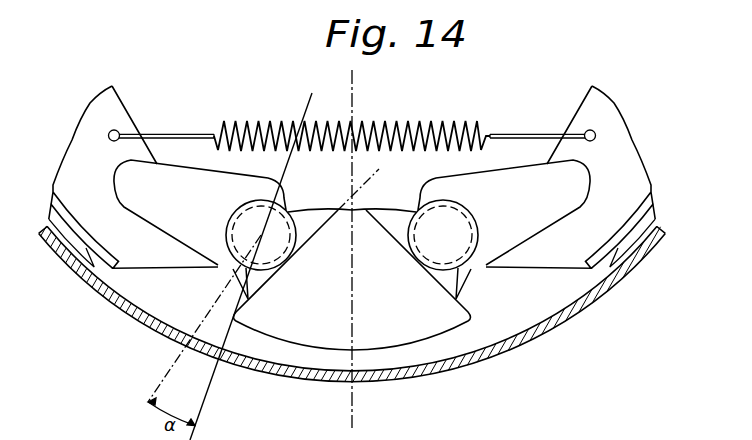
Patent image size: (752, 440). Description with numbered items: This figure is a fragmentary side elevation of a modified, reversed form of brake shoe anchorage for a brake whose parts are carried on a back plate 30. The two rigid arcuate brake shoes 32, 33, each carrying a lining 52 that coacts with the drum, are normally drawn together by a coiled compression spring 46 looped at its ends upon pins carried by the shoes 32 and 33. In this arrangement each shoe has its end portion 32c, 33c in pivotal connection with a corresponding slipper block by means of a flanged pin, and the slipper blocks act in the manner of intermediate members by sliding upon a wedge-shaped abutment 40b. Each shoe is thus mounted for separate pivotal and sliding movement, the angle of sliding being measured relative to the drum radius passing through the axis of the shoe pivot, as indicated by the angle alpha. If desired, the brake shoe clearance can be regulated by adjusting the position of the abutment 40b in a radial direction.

The back plate 30 is at (270, 353).
The brake shoe 32 is at (118, 127).
The brake shoe 33 is at (588, 127).
The end portion 32c is at (175, 202).
The end portion 33c is at (522, 213).
The wedge-shaped abutment 40b is at (400, 327).
The coiled compression spring 46 is at (238, 120).
The lining 52 is at (84, 248).